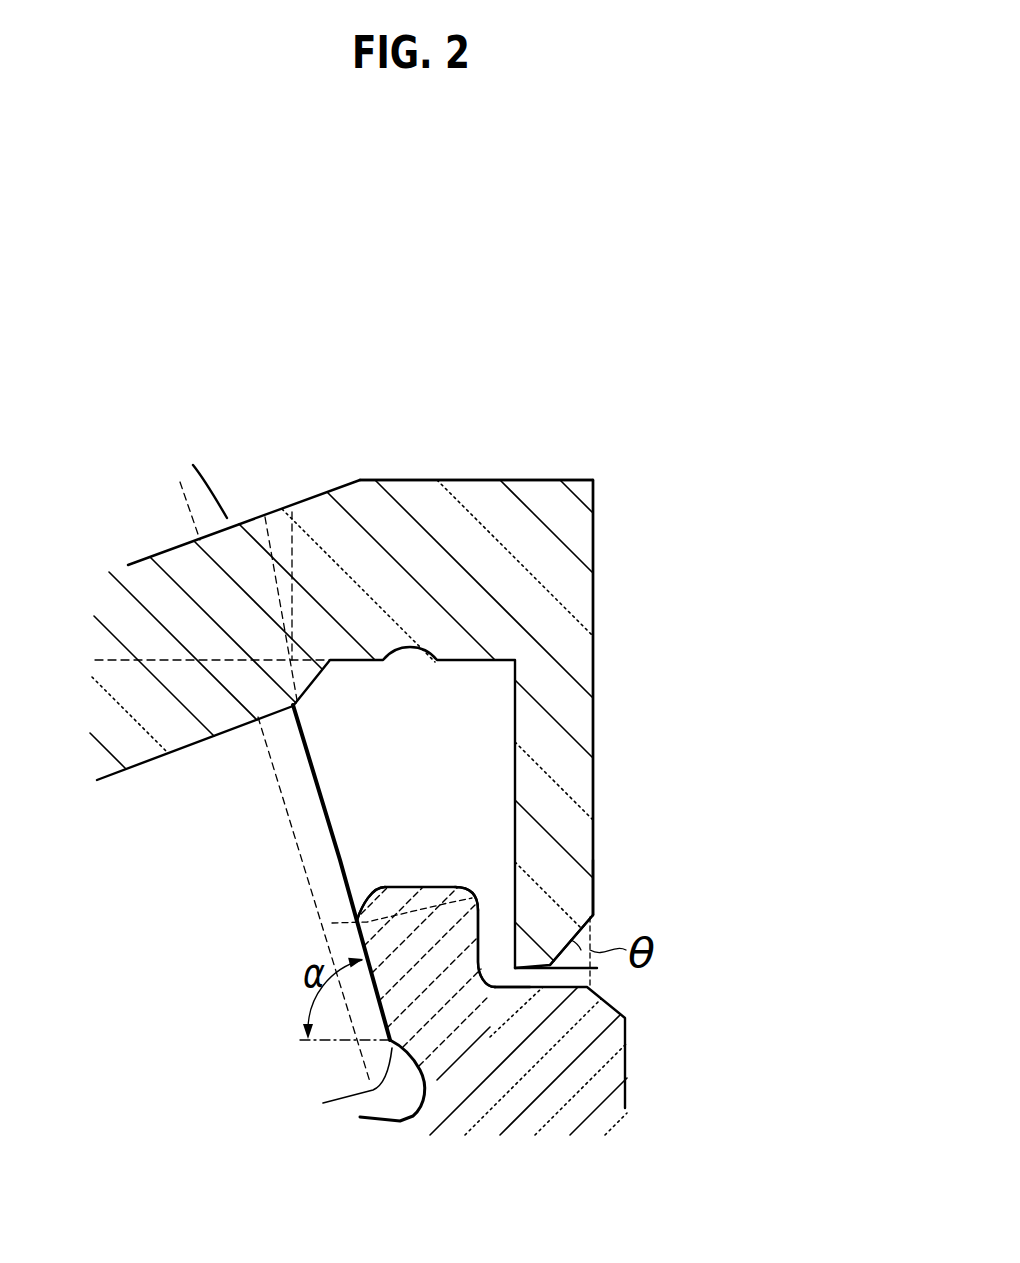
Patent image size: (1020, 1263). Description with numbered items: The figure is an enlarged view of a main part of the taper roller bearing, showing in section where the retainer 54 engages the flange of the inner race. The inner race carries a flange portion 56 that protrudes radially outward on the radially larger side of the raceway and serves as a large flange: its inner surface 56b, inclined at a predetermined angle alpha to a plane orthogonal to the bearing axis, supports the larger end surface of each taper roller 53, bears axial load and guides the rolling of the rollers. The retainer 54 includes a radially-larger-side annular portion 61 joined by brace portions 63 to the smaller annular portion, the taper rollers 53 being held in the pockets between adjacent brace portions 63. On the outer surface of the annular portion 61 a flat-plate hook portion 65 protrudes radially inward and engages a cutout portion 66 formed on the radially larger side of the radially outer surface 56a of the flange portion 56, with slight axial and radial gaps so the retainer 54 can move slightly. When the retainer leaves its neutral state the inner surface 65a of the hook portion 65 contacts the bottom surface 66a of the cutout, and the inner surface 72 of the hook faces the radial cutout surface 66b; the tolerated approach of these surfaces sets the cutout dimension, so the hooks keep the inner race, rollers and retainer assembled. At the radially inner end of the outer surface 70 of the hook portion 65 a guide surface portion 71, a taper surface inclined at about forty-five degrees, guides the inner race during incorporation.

The taper roller 53 is at (262, 834).
The retainer 54 is at (462, 478).
The flange portion 56 is at (401, 874).
The radially outer surface of the flange portion 56a is at (428, 886).
The inner surface of the flange portion 56b is at (370, 960).
The radially-larger-side annular portion 61 is at (538, 497).
The brace portion 63 is at (173, 722).
The hook portion 65 is at (610, 825).
The inner surface of the hook portion 65a is at (528, 990).
The cutout portion 66 is at (487, 950).
The bottom surface of the cutout portion 66a is at (487, 990).
The radial cutout surface of the cutout portion 66b is at (332, 923).
The outer surface of the hook portion 70 is at (594, 874).
The guide surface portion 71 is at (596, 919).
The inner surface of the hook portion 72 is at (397, 1124).